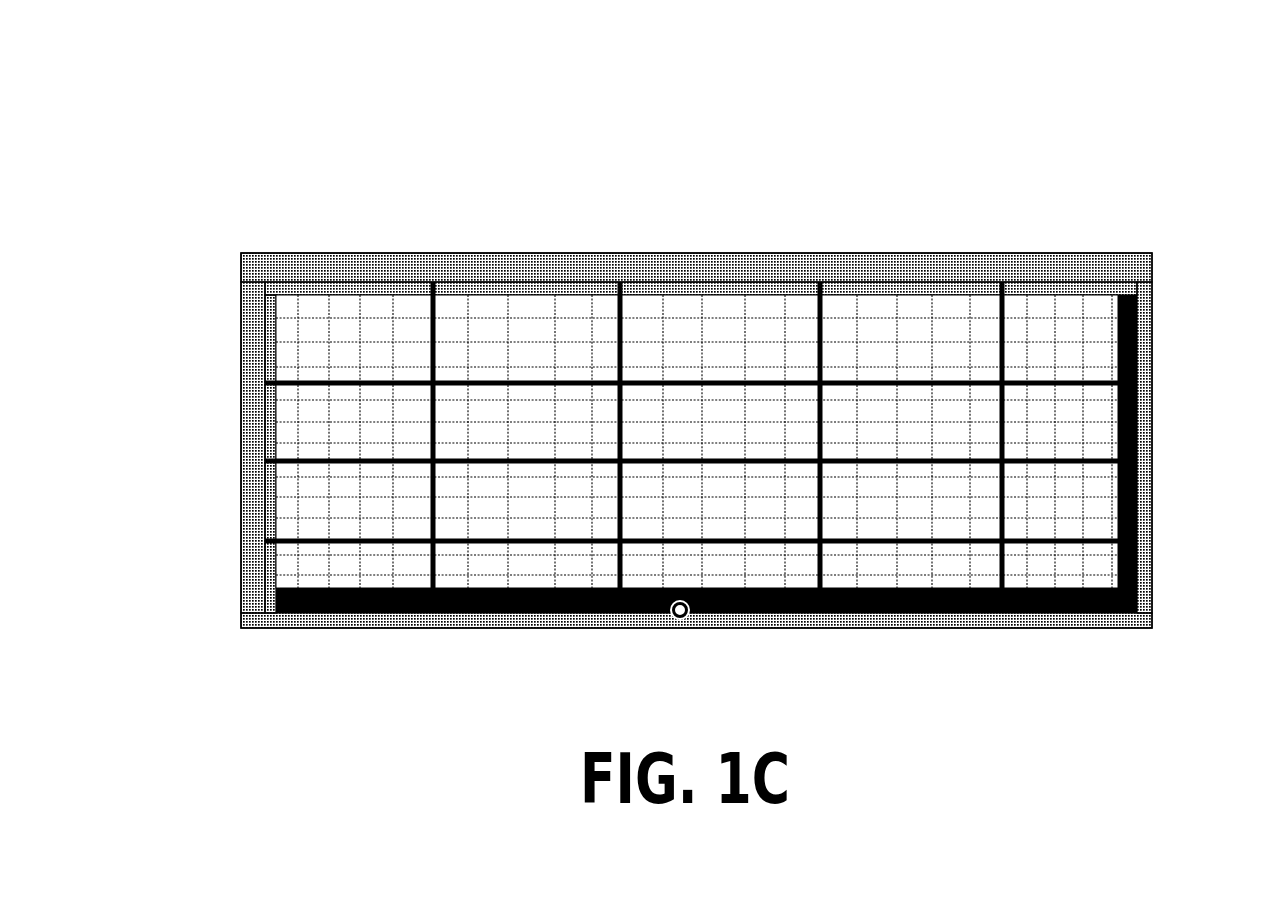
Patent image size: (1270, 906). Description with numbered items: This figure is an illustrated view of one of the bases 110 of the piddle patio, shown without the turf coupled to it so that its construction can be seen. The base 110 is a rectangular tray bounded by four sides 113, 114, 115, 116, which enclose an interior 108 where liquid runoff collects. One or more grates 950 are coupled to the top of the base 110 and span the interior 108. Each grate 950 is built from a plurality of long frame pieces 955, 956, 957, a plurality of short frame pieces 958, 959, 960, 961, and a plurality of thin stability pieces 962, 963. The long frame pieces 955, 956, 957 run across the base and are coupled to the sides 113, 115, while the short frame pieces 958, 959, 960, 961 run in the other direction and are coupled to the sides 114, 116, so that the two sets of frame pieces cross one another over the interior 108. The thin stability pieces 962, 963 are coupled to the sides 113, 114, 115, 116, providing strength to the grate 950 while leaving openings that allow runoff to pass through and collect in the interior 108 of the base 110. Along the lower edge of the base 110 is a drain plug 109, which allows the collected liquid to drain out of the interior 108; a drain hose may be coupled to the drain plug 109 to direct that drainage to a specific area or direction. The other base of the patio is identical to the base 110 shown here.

The base 110 is at (627, 42).
The interior 108 is at (375, 520).
The drain plug 109 is at (682, 623).
The side 113 is at (1158, 399).
The side 114 is at (824, 642).
The side 115 is at (235, 365).
The side 116 is at (585, 243).
The grate 950 is at (913, 293).
The long frame piece 955 is at (262, 383).
The long frame piece 956 is at (262, 461).
The long frame piece 957 is at (262, 541).
The short frame piece 958 is at (433, 266).
The short frame piece 959 is at (620, 268).
The short frame piece 960 is at (820, 266).
The short frame piece 961 is at (1002, 268).
The thin stability piece 962 is at (357, 296).
The thin stability piece 963 is at (483, 590).